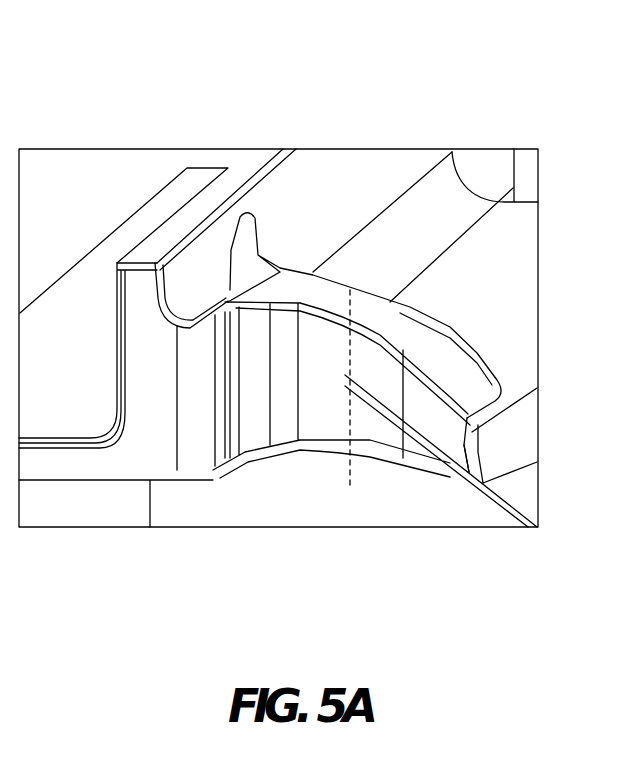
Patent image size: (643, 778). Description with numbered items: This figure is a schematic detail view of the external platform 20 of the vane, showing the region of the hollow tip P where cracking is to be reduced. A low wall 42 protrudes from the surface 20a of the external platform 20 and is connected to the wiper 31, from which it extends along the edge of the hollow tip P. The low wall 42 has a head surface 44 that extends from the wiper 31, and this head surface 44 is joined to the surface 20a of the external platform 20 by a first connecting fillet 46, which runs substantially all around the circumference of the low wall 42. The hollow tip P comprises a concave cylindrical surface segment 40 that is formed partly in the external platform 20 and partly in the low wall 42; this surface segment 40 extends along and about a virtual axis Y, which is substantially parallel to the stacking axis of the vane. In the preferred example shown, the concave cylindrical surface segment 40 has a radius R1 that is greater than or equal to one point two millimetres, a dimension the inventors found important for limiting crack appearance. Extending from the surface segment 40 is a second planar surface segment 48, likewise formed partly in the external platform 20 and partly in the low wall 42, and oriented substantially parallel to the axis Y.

The external platform 20 is at (490, 255).
The surface of the external platform 20a is at (520, 307).
The wiper 31 is at (228, 168).
The concave cylindrical surface segment 40 is at (387, 368).
The low wall 42 is at (314, 278).
The head surface 44 is at (363, 300).
The first connecting fillet 46 is at (517, 450).
The second planar surface segment 48 is at (405, 408).
The hollow tip P is at (267, 477).
The virtual axis Y is at (357, 470).
The radius R1 is at (464, 487).